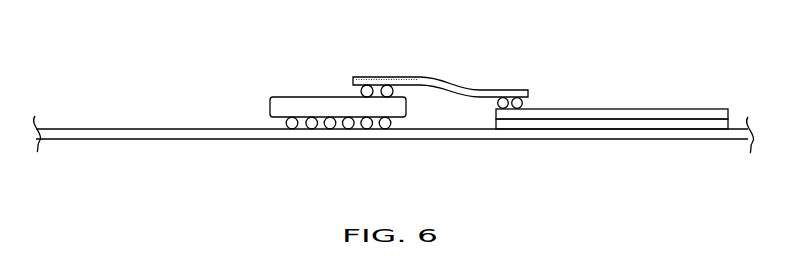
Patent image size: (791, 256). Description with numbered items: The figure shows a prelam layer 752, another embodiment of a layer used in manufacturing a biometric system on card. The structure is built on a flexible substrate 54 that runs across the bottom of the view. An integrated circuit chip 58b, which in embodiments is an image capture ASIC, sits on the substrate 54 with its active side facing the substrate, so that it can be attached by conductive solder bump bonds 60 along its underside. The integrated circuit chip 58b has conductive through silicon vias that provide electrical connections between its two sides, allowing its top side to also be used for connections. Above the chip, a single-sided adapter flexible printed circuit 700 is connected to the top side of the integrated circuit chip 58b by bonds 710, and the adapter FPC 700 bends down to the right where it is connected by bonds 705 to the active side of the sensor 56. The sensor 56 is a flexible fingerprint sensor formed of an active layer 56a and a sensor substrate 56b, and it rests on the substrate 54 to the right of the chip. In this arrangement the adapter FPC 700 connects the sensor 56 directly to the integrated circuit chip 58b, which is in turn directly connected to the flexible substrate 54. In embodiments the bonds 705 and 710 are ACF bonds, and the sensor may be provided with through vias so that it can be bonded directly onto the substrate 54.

The prelam layer 752 is at (302, 158).
The substrate 54 is at (692, 135).
The integrated circuit chip 58b is at (404, 107).
The conductive solder bump bonds 60 is at (311, 117).
The single-sided adapter flexible printed circuit 700 is at (428, 78).
The bonds 710 is at (386, 86).
The bonds 705 is at (524, 101).
The sensor 56 is at (731, 119).
The active layer 56a is at (642, 112).
The sensor substrate 56b is at (603, 123).